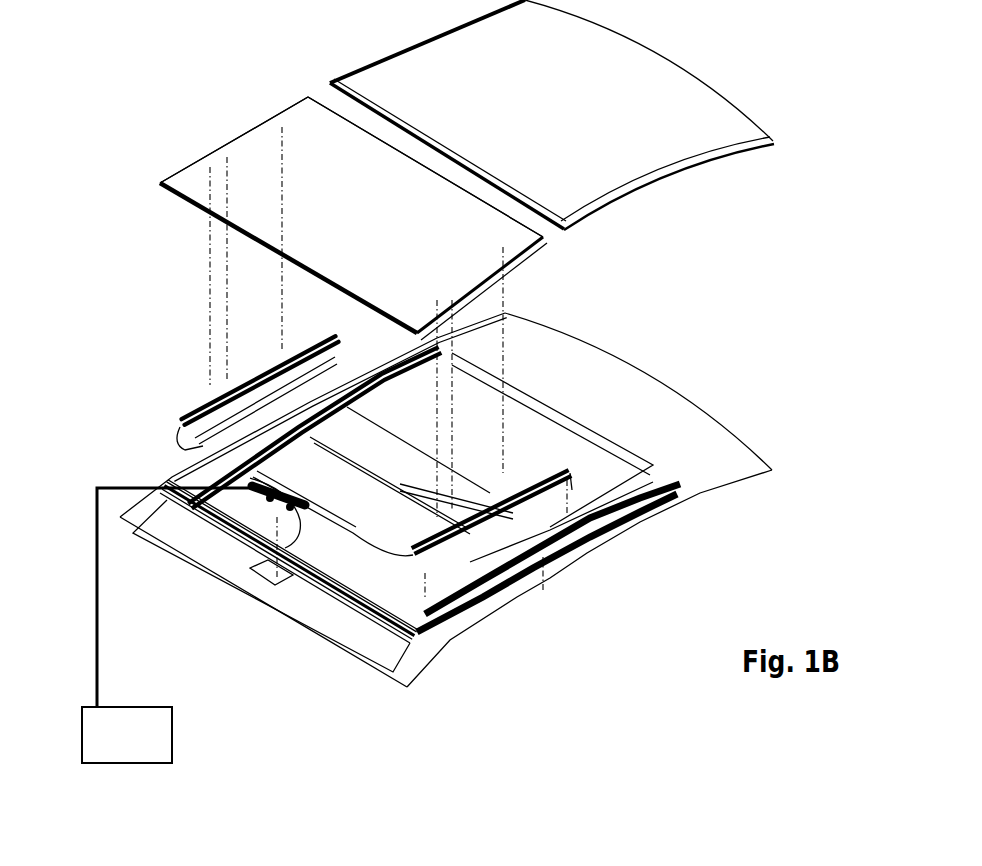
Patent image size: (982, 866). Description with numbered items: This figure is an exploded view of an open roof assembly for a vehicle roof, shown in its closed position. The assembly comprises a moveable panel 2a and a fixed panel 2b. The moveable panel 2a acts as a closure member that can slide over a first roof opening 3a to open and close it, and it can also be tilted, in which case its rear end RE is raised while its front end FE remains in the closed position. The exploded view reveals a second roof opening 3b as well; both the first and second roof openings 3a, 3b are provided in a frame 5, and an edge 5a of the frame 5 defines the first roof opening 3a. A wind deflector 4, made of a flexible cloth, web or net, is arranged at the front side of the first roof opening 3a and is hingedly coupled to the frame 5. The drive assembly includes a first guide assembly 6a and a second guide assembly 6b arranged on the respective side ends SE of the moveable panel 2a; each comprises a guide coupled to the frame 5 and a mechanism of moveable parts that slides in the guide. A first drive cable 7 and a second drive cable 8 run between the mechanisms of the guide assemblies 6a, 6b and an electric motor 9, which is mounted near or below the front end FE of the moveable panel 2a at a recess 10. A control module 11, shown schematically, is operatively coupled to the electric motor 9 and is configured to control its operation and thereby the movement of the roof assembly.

The moveable panel 2a is at (374, 222).
The fixed panel 2b is at (550, 120).
The first roof opening 3a is at (338, 503).
The second roof opening 3b is at (524, 456).
The wind deflector 4 is at (180, 510).
The frame 5 is at (495, 617).
The edge 5a is at (508, 557).
The first guide assembly 6a is at (514, 522).
The second guide assembly 6b is at (183, 381).
The first drive cable 7 is at (345, 580).
The second drive cable 8 is at (178, 448).
The electric motor 9 is at (262, 520).
The recess 10 is at (295, 565).
The control module 11 is at (116, 750).
The front end FE is at (255, 258).
The rear end RE is at (358, 128).
The side ends SE is at (238, 138).